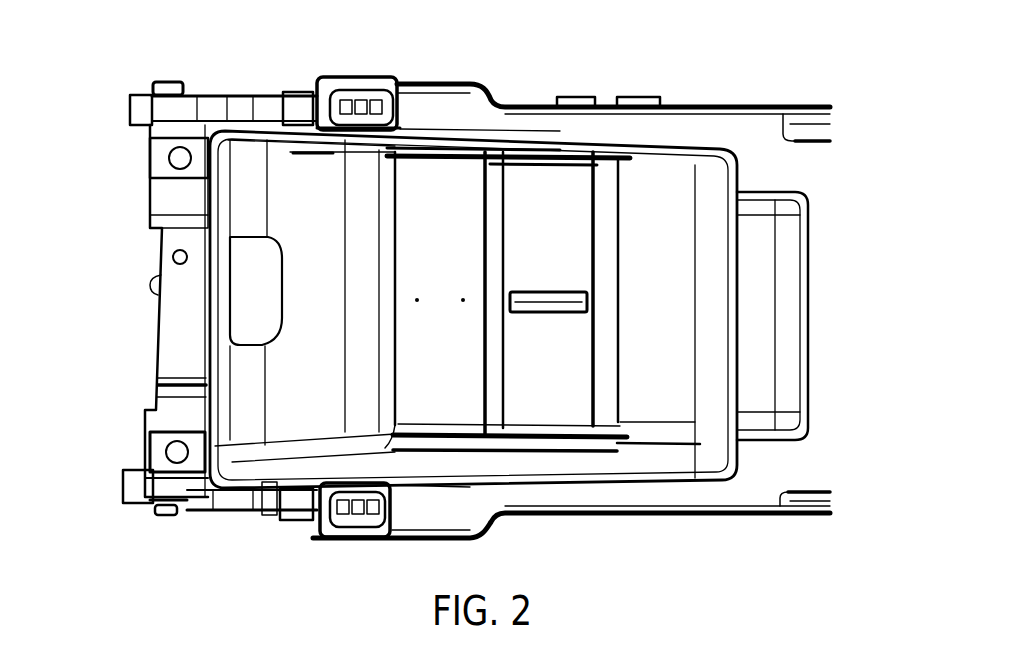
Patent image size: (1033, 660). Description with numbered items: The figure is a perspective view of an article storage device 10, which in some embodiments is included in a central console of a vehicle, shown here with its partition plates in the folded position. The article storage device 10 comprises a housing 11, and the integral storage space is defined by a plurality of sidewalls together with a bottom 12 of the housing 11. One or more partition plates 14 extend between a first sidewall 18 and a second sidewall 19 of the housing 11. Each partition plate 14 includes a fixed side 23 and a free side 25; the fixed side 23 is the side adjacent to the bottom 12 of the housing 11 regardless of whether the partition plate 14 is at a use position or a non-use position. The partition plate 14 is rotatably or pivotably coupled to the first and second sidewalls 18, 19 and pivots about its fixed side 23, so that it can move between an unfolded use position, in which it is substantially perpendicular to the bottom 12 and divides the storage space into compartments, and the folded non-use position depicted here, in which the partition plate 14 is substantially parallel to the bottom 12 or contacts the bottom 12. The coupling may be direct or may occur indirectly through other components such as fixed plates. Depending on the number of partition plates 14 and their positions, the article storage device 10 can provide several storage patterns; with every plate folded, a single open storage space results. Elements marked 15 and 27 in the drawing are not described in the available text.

The article storage device 10 is at (779, 39).
The housing 11 is at (413, 99).
The bottom 12 is at (603, 305).
The partition plate 14 is at (438, 200).
The end plate 15 is at (530, 153).
The first sidewall 18 is at (503, 470).
The second sidewall 19 is at (498, 143).
The fixed side 23 is at (598, 193).
The free side 25 is at (393, 440).
The vent slot 27 is at (590, 400).